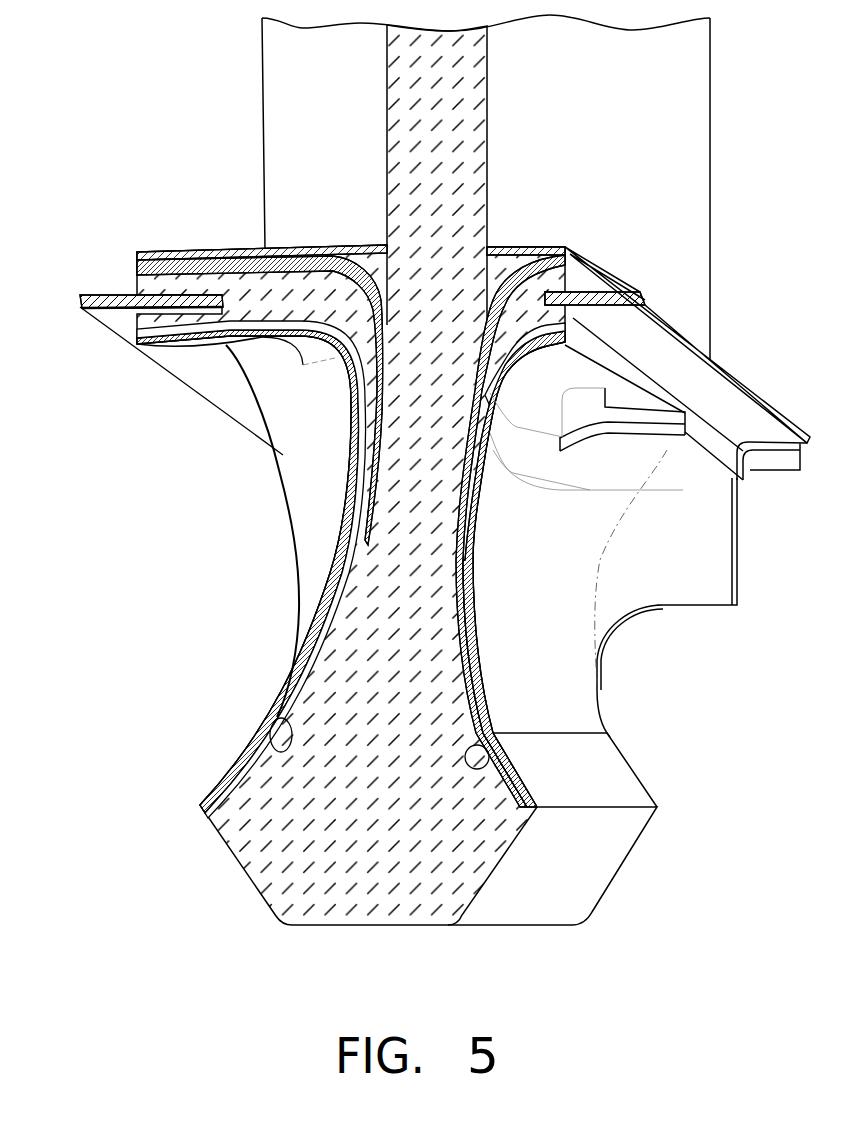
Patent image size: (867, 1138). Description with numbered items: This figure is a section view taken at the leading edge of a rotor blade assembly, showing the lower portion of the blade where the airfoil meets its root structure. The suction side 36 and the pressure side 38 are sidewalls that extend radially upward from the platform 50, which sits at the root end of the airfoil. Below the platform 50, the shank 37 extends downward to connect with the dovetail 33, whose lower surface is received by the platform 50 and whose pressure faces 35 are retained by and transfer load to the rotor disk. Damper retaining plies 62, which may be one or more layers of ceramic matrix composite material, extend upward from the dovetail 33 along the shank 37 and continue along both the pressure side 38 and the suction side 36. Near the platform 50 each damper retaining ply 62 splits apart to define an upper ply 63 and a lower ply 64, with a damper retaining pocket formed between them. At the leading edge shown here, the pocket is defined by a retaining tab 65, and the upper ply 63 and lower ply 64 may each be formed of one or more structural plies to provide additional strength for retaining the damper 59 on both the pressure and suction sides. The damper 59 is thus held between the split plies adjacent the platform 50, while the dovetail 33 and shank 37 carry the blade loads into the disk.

The dovetail 33 is at (240, 877).
The pressure faces 35 is at (277, 702).
The suction side 36 is at (292, 570).
The shank 37 is at (282, 452).
The pressure side 38 is at (500, 554).
The platform 50 is at (554, 192).
The damper 59 is at (82, 297).
The damper retaining plies 62 is at (297, 660).
The upper ply 63 is at (158, 258).
The lower ply 64 is at (150, 342).
The retaining tab 65 is at (182, 344).